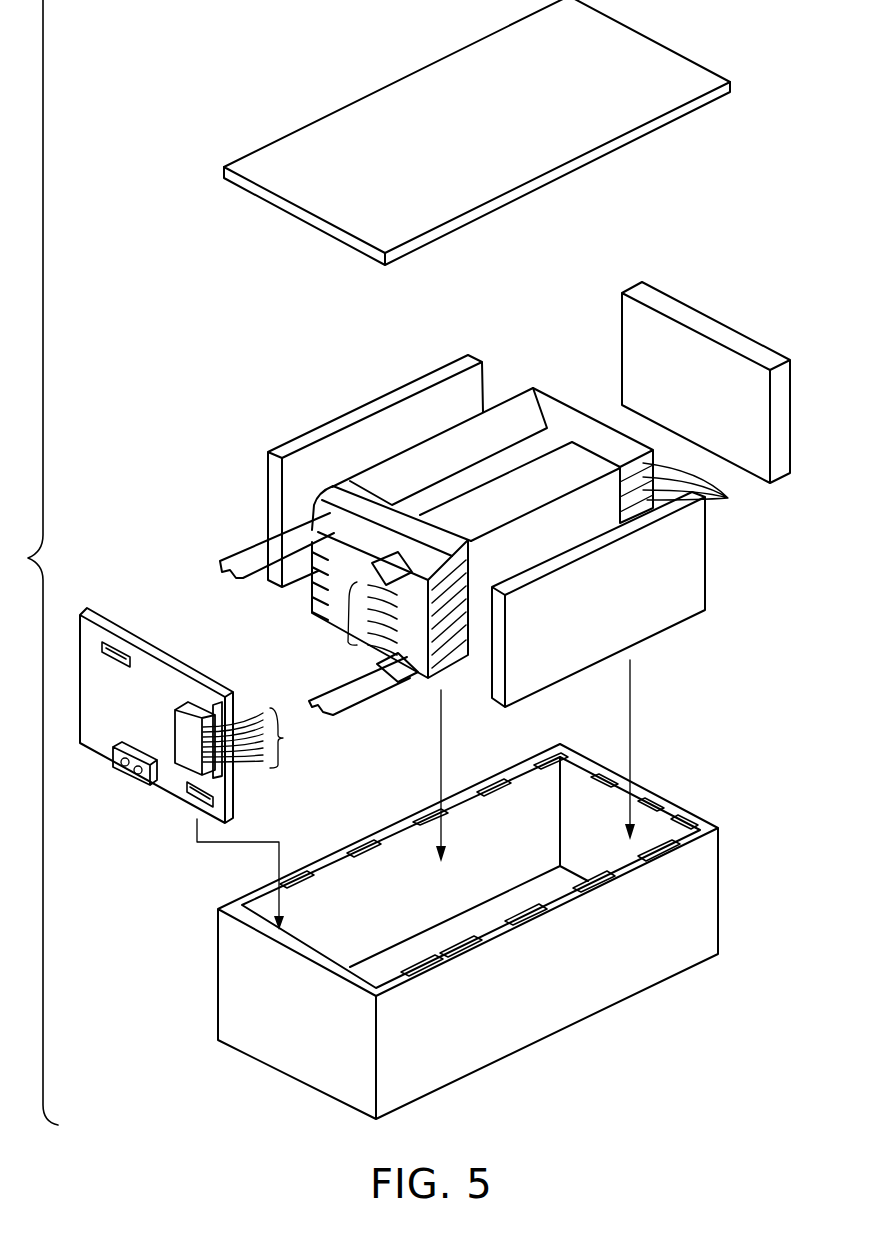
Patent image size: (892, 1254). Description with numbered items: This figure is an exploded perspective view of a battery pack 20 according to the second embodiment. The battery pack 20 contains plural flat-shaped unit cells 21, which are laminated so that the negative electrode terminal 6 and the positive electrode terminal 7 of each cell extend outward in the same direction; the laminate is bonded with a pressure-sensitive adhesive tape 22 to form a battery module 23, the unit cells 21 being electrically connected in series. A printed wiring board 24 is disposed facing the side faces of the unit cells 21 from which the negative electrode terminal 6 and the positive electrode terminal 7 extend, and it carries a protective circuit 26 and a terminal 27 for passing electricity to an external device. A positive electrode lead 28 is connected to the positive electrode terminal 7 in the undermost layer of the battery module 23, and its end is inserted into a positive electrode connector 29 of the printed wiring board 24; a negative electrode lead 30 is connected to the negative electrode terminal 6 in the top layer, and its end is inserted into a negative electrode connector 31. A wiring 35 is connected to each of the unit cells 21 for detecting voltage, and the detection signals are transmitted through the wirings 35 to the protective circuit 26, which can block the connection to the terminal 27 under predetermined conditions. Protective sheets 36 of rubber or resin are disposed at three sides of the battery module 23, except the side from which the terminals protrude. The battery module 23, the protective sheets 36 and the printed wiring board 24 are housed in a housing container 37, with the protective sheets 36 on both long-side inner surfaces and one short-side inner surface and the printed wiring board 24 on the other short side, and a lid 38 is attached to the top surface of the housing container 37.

The negative electrode terminal 6 is at (372, 588).
The positive electrode terminal 7 is at (395, 560).
The battery pack 20 is at (118, 156).
The unit cell 21 is at (730, 498).
The pressure-sensitive adhesive tape 22 is at (560, 472).
The battery module 23 is at (421, 436).
The printed wiring board 24 is at (112, 612).
The protective circuit 26 is at (188, 700).
The terminal for passing electricity to an external device 27 is at (138, 777).
The positive electrode lead 28 is at (355, 698).
The positive electrode connector 29 is at (227, 797).
The negative electrode lead 30 is at (233, 556).
The negative electrode connector 31 is at (122, 647).
The wiring 35 is at (348, 612).
The protective sheet 36 is at (338, 427).
The housing container 37 is at (705, 898).
The lid 38 is at (667, 68).